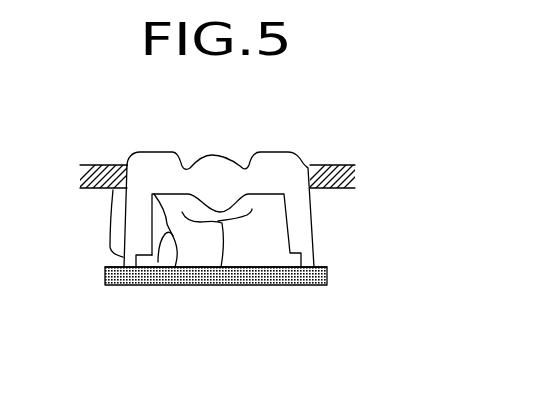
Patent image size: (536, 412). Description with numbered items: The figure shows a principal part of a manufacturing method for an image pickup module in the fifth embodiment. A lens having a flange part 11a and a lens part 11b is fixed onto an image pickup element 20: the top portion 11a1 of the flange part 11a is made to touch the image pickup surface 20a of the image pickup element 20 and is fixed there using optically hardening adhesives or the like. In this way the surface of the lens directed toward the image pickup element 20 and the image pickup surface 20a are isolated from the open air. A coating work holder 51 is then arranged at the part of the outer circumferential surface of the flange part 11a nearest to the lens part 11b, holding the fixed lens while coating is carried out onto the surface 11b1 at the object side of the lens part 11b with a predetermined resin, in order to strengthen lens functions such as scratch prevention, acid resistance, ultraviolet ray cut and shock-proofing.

The coating work holder 51 is at (92, 166).
The surface at the object side 11b1 is at (232, 156).
The flange part 11a is at (111, 211).
The lens part 11b is at (232, 262).
The top portion 11a1 is at (124, 266).
The image pickup element 20 is at (279, 284).
The image pickup surface 20a is at (205, 267).